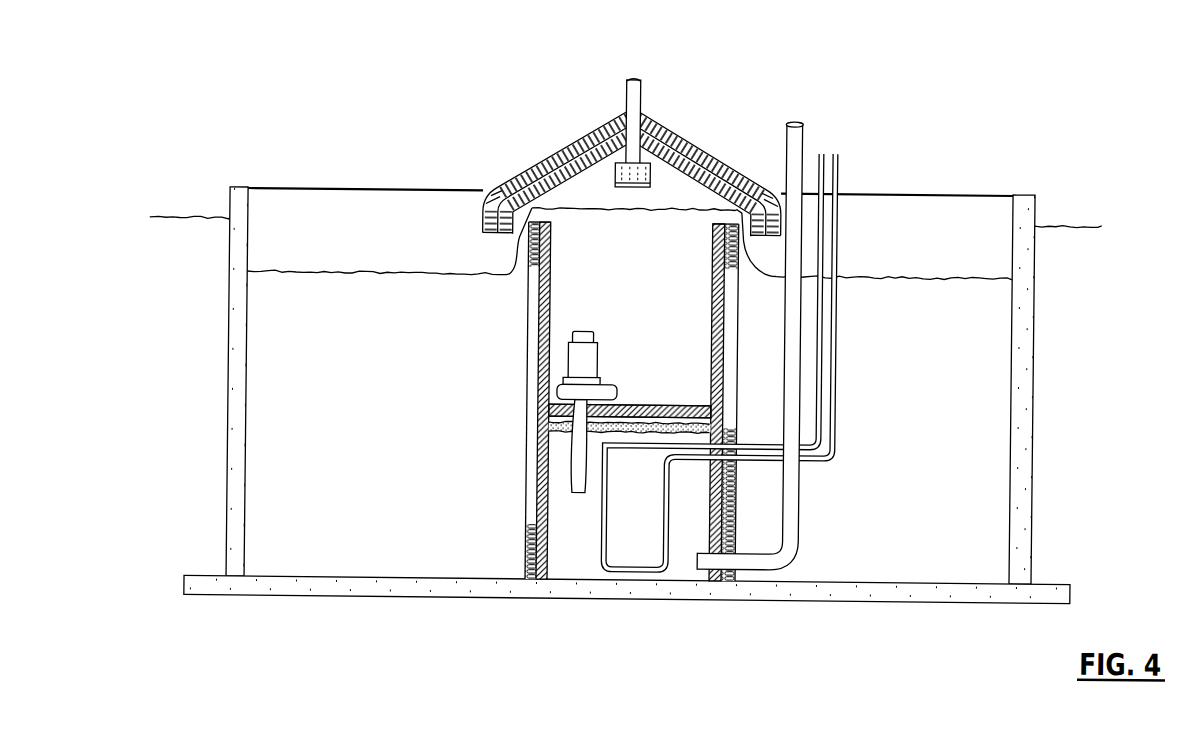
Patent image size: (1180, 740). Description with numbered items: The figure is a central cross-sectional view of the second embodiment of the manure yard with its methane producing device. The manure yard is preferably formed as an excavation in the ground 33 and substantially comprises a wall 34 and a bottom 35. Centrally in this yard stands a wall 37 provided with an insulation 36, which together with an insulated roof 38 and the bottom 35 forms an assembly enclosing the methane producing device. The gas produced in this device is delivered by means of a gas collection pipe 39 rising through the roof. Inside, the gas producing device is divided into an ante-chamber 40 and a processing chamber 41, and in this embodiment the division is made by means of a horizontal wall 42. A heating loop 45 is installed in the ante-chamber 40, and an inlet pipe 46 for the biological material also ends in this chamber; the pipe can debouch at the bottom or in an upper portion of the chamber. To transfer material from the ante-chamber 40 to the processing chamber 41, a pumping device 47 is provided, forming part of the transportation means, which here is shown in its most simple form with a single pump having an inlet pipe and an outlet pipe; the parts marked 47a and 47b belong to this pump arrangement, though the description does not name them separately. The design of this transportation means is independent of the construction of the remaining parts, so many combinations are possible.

The ground 33 is at (205, 231).
The wall 34 is at (248, 231).
The bottom 35 is at (269, 588).
The insulation 36 is at (527, 278).
The wall 37 is at (526, 253).
The insulated roof 38 is at (552, 157).
The gas collection pipe 39 is at (650, 175).
The ante-chamber 40 is at (710, 518).
The processing chamber 41 is at (535, 207).
The horizontal wall 42 is at (667, 405).
The heating loop 45 is at (654, 572).
The inlet pipe 46 is at (798, 141).
The pumping device 47 is at (557, 500).
The sensor cable 47a is at (567, 495).
The sensor head 47b is at (613, 392).